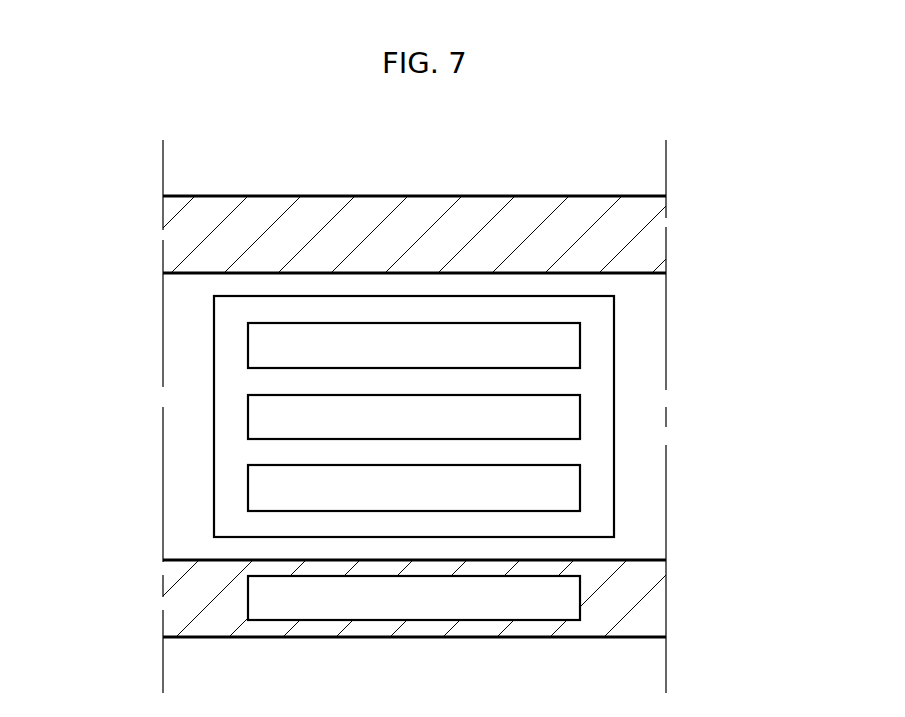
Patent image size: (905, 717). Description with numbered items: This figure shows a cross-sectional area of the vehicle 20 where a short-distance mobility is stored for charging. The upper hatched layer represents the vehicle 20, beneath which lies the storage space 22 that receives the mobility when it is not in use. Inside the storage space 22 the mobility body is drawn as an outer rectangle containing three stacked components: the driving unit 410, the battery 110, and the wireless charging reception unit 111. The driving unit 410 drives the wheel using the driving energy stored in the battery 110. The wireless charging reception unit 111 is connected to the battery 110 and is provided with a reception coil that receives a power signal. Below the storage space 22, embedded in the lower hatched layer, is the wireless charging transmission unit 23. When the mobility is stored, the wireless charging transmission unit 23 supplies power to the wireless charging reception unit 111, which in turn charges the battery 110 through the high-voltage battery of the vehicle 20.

The vehicle 20 is at (648, 238).
The storage space 22 is at (192, 409).
The wireless charging transmission unit 23 is at (552, 598).
The driving unit 410 is at (552, 347).
The battery 110 is at (552, 418).
The wireless charging reception unit 111 is at (552, 489).